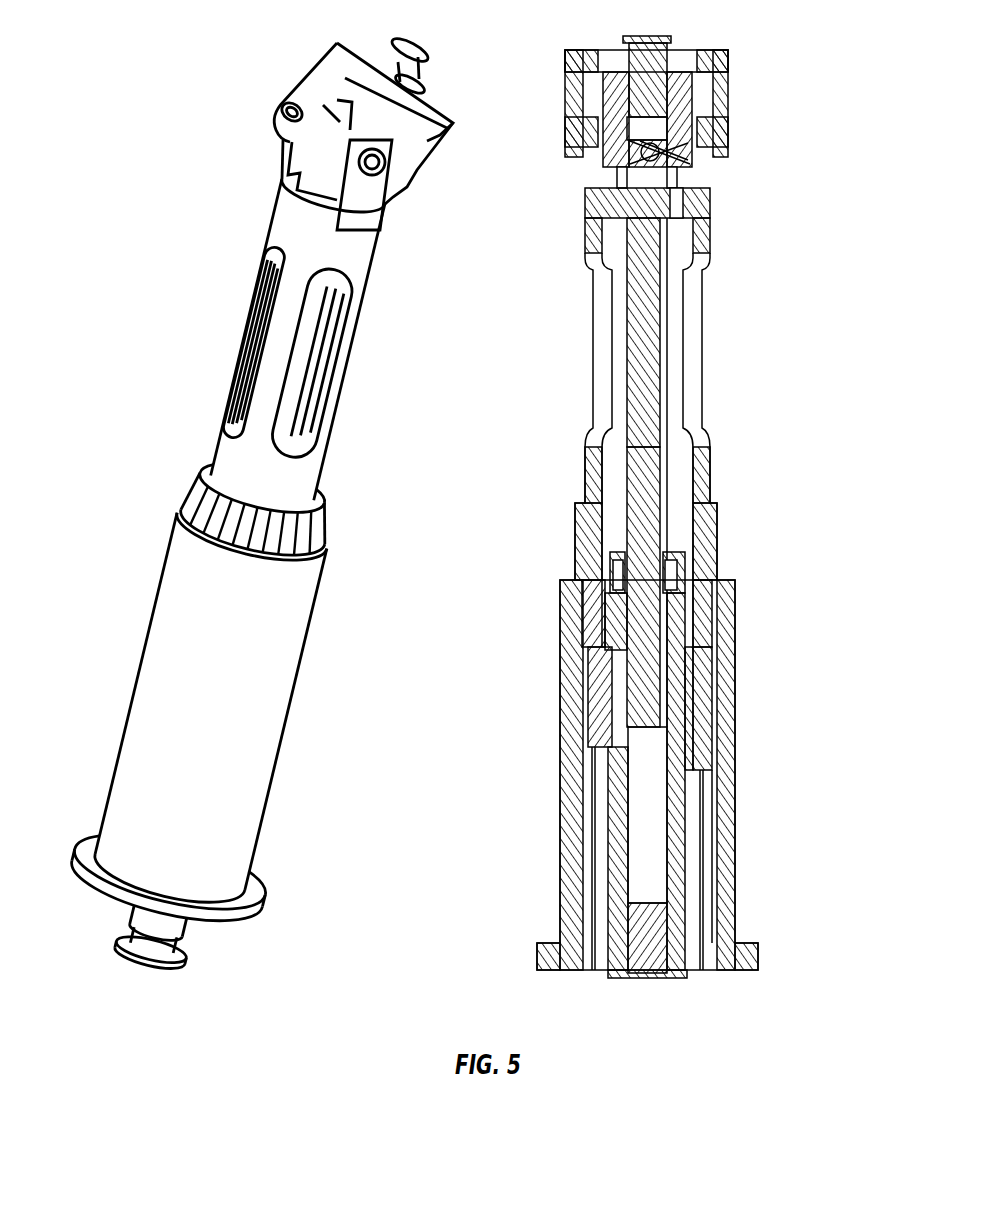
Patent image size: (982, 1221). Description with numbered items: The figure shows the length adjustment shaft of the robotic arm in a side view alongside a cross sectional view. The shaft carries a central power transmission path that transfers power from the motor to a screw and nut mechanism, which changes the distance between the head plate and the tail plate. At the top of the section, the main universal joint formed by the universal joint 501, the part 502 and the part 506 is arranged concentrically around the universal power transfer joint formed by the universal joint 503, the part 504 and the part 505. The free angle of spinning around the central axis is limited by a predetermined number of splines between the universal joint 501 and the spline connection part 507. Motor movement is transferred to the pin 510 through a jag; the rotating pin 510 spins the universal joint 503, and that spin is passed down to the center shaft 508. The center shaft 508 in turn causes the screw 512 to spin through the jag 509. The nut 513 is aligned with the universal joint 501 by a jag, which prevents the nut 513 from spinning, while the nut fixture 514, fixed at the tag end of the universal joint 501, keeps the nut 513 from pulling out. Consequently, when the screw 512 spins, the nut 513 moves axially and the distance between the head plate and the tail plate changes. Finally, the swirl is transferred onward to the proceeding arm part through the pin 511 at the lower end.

The universal joint 501 is at (703, 398).
The main universal joint part 502 is at (728, 130).
The universal joint 503 is at (694, 97).
The universal power transfer joint part 504 is at (670, 215).
The universal power transfer joint part 505 is at (652, 170).
The main universal joint part 506 is at (722, 62).
The spline connection part 507 is at (735, 598).
The center shaft 508 is at (660, 490).
The jag 509 is at (682, 552).
The pin 510 is at (628, 42).
The pin 511 is at (673, 977).
The screw 512 is at (682, 613).
The nut 513 is at (690, 648).
The nut fixture 514 is at (703, 747).